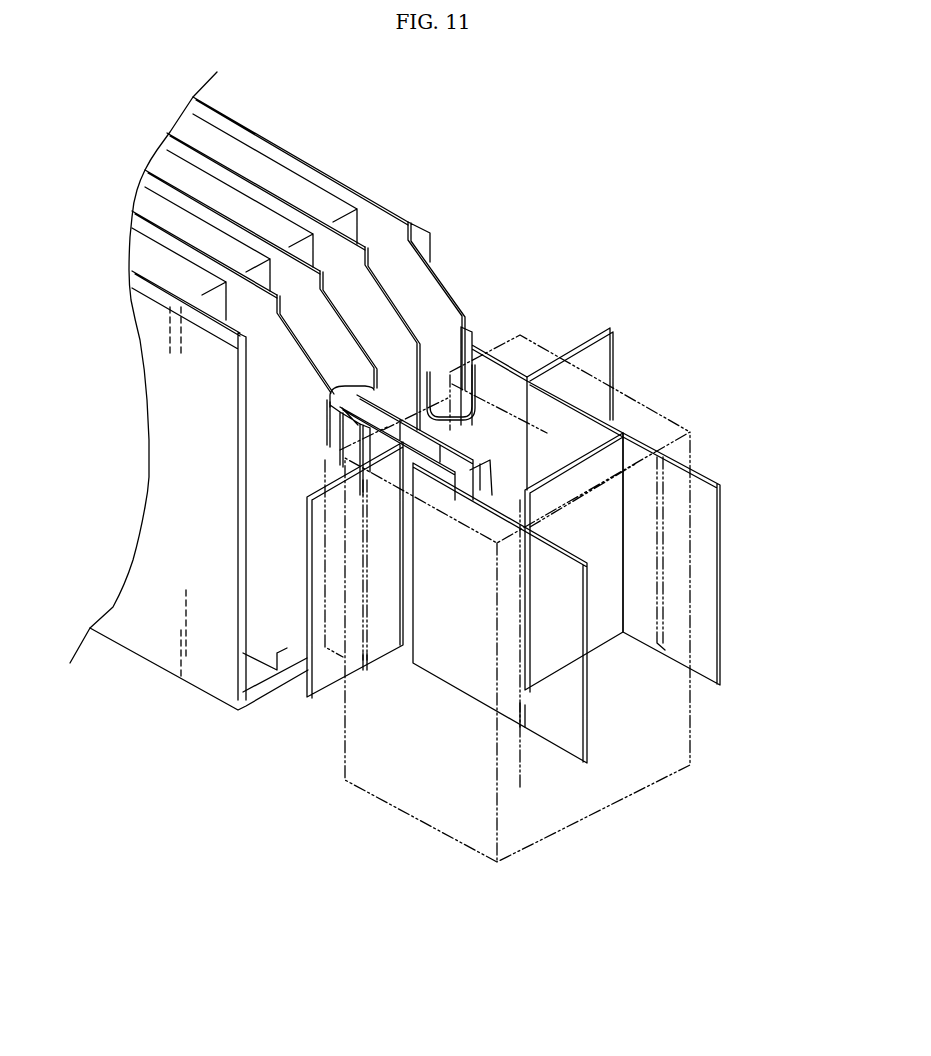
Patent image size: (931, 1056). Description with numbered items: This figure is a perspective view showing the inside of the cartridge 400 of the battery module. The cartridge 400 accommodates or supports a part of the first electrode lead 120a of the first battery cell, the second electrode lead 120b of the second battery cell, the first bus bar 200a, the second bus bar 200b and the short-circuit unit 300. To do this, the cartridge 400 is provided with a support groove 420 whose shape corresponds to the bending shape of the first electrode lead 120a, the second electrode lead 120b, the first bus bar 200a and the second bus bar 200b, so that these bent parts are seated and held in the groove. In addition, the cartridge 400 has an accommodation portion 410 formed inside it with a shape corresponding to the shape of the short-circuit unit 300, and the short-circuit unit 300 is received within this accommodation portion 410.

The first electrode lead 120a is at (347, 443).
The second electrode lead 120b is at (487, 370).
The short-circuit unit 300 is at (350, 382).
The accommodation portion 410 is at (513, 470).
The first bus bar 200a is at (601, 714).
The second bus bar 200b is at (735, 637).
The cartridge 400 is at (415, 776).
The support groove 420 is at (365, 651).